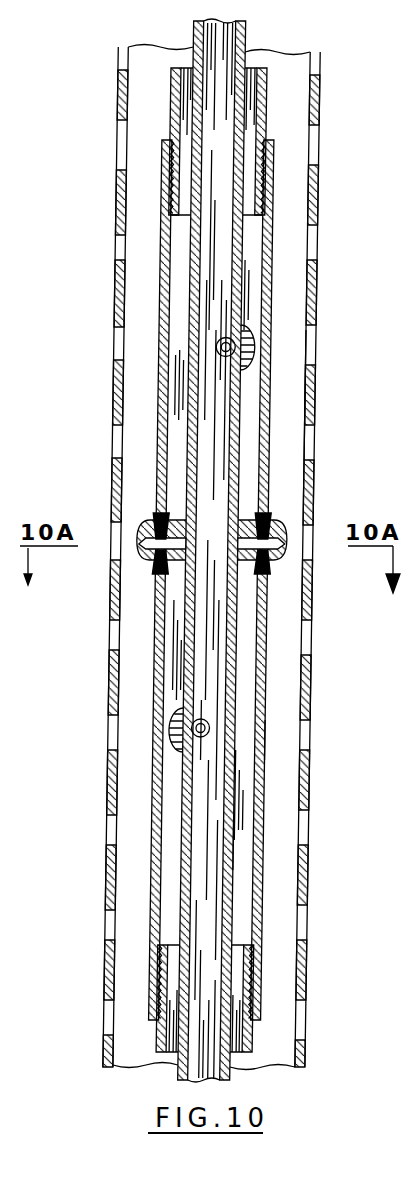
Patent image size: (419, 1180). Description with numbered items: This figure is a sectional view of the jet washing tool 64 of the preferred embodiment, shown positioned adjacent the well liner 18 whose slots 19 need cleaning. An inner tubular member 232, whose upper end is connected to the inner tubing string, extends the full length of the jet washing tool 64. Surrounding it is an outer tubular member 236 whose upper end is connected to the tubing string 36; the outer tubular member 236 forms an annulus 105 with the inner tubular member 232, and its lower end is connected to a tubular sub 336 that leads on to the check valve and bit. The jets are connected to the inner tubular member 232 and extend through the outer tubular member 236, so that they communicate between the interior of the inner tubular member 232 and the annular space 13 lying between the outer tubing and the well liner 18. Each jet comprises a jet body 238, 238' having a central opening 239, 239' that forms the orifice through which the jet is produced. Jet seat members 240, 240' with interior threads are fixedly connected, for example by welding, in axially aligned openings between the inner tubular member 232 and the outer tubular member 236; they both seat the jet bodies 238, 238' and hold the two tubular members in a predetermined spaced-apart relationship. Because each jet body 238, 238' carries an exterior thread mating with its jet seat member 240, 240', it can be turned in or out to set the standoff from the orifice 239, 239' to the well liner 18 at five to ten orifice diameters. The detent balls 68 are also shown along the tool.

The well liner 18 is at (320, 182).
The inner tubular member 232 is at (247, 32).
The jet washing tool 64 is at (150, 349).
The tubing string 36 is at (269, 112).
The tubular sub 336 is at (258, 1036).
The annulus 105 is at (252, 273).
The slots 19 is at (302, 453).
The annular space 13 is at (283, 741).
The outer tubular member 236 is at (232, 845).
The detent balls 68 is at (261, 321).
The jet body 238 is at (110, 517).
The jet body 238' is at (317, 517).
The central opening 239 is at (118, 570).
The central opening 239' is at (307, 571).
The jet seat member 240 is at (101, 511).
The jet seat member 240' is at (324, 511).